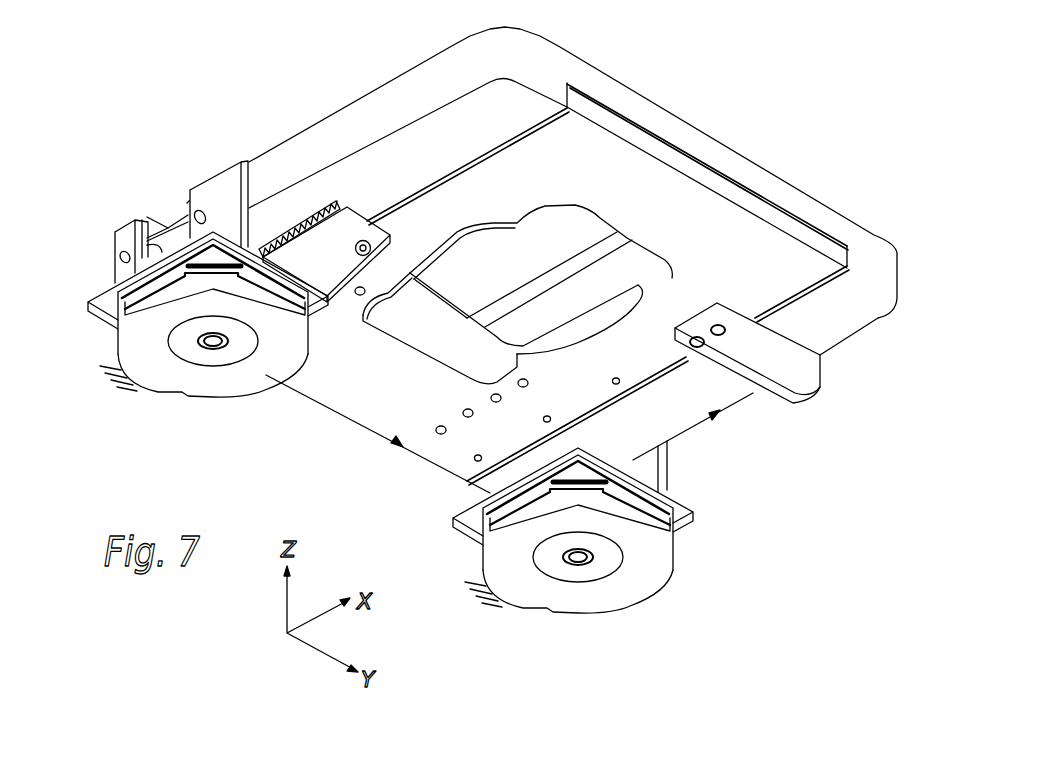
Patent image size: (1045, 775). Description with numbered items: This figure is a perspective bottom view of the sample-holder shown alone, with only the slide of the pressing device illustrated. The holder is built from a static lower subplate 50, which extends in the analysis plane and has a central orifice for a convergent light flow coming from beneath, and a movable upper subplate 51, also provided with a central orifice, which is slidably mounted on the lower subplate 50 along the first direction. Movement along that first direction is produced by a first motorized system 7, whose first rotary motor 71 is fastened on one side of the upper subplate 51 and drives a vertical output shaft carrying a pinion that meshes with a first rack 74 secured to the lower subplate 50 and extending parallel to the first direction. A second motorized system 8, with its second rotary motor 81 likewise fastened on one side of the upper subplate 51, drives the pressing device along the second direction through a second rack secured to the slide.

The static lower subplate 50 is at (680, 196).
The movable upper subplate 51 is at (366, 125).
The first motorized system 7 is at (208, 353).
The first rotary motor 71 is at (237, 373).
The first rack 74 is at (310, 223).
The second motorized system 8 is at (593, 547).
The second rotary motor 81 is at (590, 588).